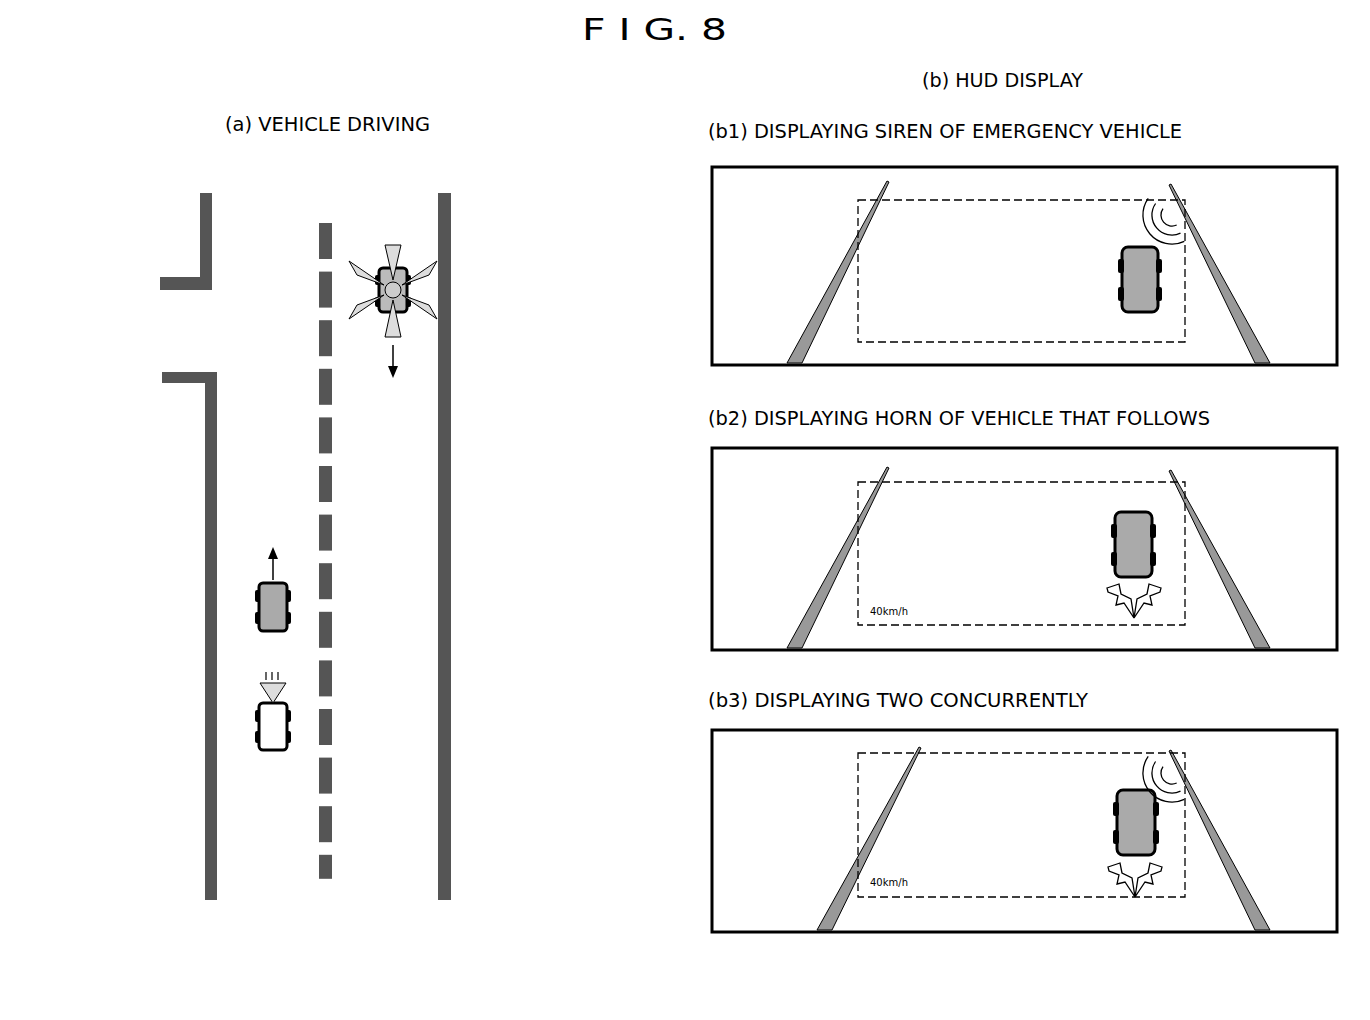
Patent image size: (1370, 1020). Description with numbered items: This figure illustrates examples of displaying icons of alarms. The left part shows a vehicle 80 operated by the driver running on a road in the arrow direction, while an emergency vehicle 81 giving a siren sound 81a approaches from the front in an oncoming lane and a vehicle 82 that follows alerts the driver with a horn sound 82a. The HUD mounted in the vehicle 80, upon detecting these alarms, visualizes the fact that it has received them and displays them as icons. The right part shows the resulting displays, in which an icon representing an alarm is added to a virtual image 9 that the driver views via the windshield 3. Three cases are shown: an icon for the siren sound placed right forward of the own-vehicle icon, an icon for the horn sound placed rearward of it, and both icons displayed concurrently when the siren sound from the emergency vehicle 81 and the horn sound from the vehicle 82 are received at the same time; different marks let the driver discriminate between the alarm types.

The windshield 3 is at (1253, 166).
The virtual image 9 is at (858, 212).
The vehicle operated by the driver 80 is at (248, 599).
The emergency vehicle 81 is at (400, 292).
The siren sound 81a is at (398, 331).
The vehicle that follows 82 is at (246, 726).
The horn sound 82a is at (255, 688).